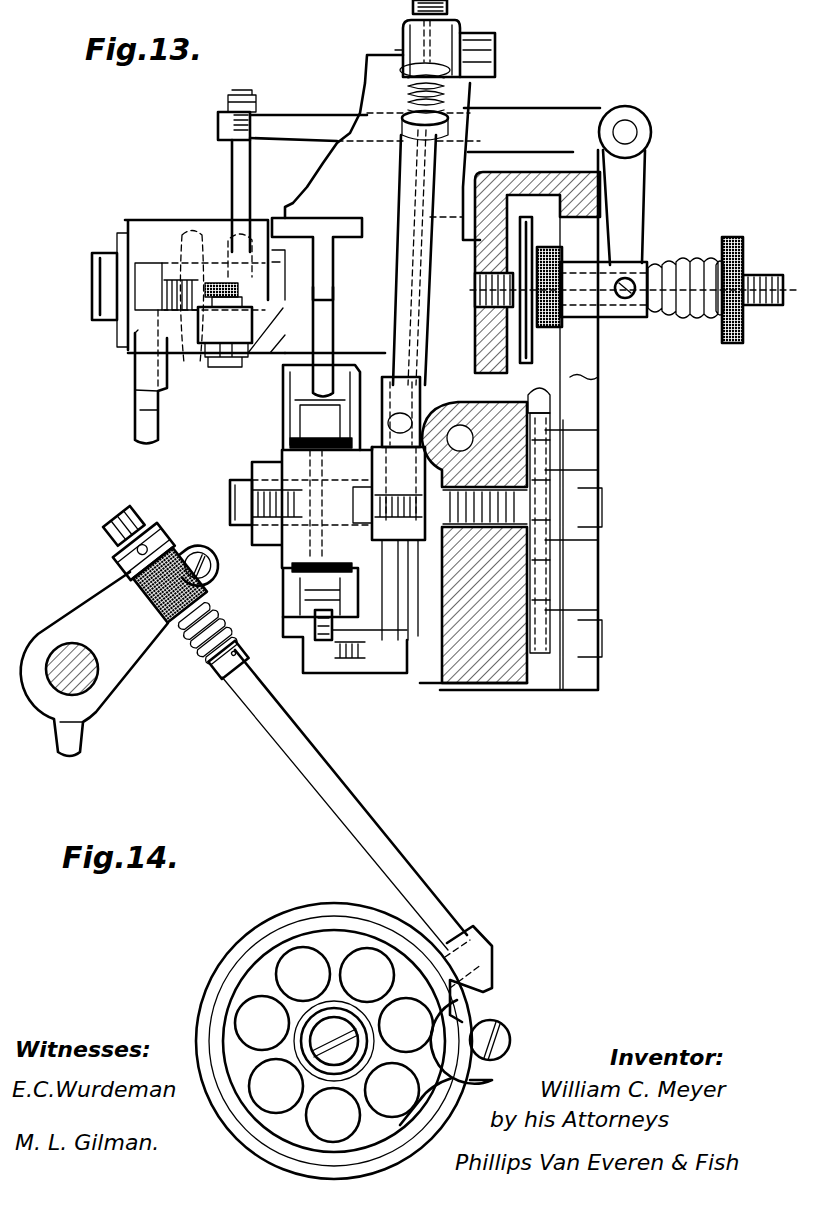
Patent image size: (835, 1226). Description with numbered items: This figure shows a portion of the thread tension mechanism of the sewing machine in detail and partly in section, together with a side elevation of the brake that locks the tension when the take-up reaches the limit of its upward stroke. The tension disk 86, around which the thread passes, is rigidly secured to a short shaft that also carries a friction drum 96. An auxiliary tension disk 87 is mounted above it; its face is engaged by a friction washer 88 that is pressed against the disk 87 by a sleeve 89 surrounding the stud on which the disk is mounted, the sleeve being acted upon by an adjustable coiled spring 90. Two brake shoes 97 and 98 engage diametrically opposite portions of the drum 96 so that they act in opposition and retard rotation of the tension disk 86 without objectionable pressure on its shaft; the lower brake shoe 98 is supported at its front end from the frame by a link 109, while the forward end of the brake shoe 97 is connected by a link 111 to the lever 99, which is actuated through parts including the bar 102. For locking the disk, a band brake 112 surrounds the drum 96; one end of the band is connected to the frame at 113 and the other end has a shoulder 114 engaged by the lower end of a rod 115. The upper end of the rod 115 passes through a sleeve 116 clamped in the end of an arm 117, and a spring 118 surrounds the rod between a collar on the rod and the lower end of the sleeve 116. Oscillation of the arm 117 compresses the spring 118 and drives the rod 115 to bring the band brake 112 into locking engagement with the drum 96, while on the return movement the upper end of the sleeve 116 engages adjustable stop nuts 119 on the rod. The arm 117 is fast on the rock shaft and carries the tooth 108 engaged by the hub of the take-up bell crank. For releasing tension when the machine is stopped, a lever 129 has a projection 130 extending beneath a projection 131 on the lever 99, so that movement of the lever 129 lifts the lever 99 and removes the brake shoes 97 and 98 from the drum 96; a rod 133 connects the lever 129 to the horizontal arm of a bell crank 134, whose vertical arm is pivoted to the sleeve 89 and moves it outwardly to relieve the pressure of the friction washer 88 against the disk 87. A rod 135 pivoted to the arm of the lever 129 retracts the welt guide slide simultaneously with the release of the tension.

In FIG. 13, the tension disk 86 is at (550, 427).
In FIG. 13, the auxiliary tension disk 87 is at (490, 262).
In FIG. 13, the friction washer 88 is at (533, 250).
In FIG. 13, the sleeve 89 is at (622, 312).
In FIG. 13, the adjustable coiled spring 90 is at (683, 265).
In FIG. 13, the friction drum 96 is at (292, 450).
In FIG. 13, the brake shoe 97 is at (300, 375).
In FIG. 13, the brake shoe 98 is at (300, 590).
In FIG. 13, the lever 99 is at (318, 228).
In FIG. 14, the bar 102 is at (66, 680).
In FIG. 14, the tooth 108 is at (65, 750).
In FIG. 13, the link 109 is at (322, 627).
In FIG. 13, the link 111 is at (350, 320).
In FIG. 13, the band brake 112 is at (397, 625).
In FIG. 14, the band brake 112 is at (305, 912).
In FIG. 13, the frame connection 113 is at (352, 505).
In FIG. 14, the frame connection 113 is at (500, 1035).
In FIG. 13, the shoulder 114 is at (412, 410).
In FIG. 14, the shoulder 114 is at (477, 946).
In FIG. 13, the rod 115 is at (410, 173).
In FIG. 14, the rod 115 is at (353, 812).
In FIG. 13, the sleeve 116 is at (492, 62).
In FIG. 14, the sleeve 116 is at (165, 560).
In FIG. 14, the arm 117 is at (83, 620).
In FIG. 13, the spring 118 is at (447, 100).
In FIG. 14, the spring 118 is at (212, 656).
In FIG. 13, the adjustable stop nuts 119 is at (442, 12).
In FIG. 14, the adjustable stop nuts 119 is at (108, 527).
In FIG. 13, the lever 129 is at (152, 372).
In FIG. 13, the projection 130 is at (218, 342).
In FIG. 13, the projection 131 is at (220, 275).
In FIG. 13, the rod 133 is at (240, 163).
In FIG. 13, the bell crank 134 is at (298, 120).
In FIG. 13, the rod 135 is at (140, 408).